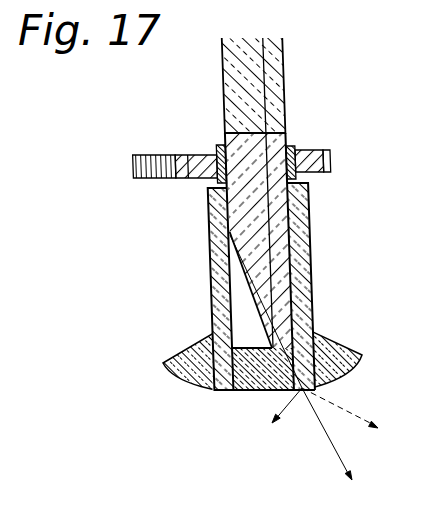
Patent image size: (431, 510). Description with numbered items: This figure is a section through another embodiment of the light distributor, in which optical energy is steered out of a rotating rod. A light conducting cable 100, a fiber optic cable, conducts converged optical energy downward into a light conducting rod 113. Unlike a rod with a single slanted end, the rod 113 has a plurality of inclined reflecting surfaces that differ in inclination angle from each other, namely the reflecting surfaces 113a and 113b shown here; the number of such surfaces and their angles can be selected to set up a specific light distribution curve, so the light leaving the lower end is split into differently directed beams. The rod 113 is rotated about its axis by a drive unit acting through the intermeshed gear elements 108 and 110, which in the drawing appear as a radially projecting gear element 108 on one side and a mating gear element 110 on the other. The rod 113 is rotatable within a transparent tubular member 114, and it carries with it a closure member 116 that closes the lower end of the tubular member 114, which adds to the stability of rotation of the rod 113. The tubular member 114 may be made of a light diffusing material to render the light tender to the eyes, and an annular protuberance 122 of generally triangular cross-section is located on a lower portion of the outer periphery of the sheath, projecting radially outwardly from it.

The light conducting cable 100 is at (283, 60).
The gear element 108 is at (148, 155).
The gear element 110 is at (315, 150).
The light conducting rod 113 is at (288, 233).
The reflecting surface 113a is at (236, 280).
The reflecting surface 113b is at (266, 332).
The transparent tubular member 114 is at (220, 305).
The closure member 116 is at (252, 390).
The annular protuberance 122 is at (333, 333).